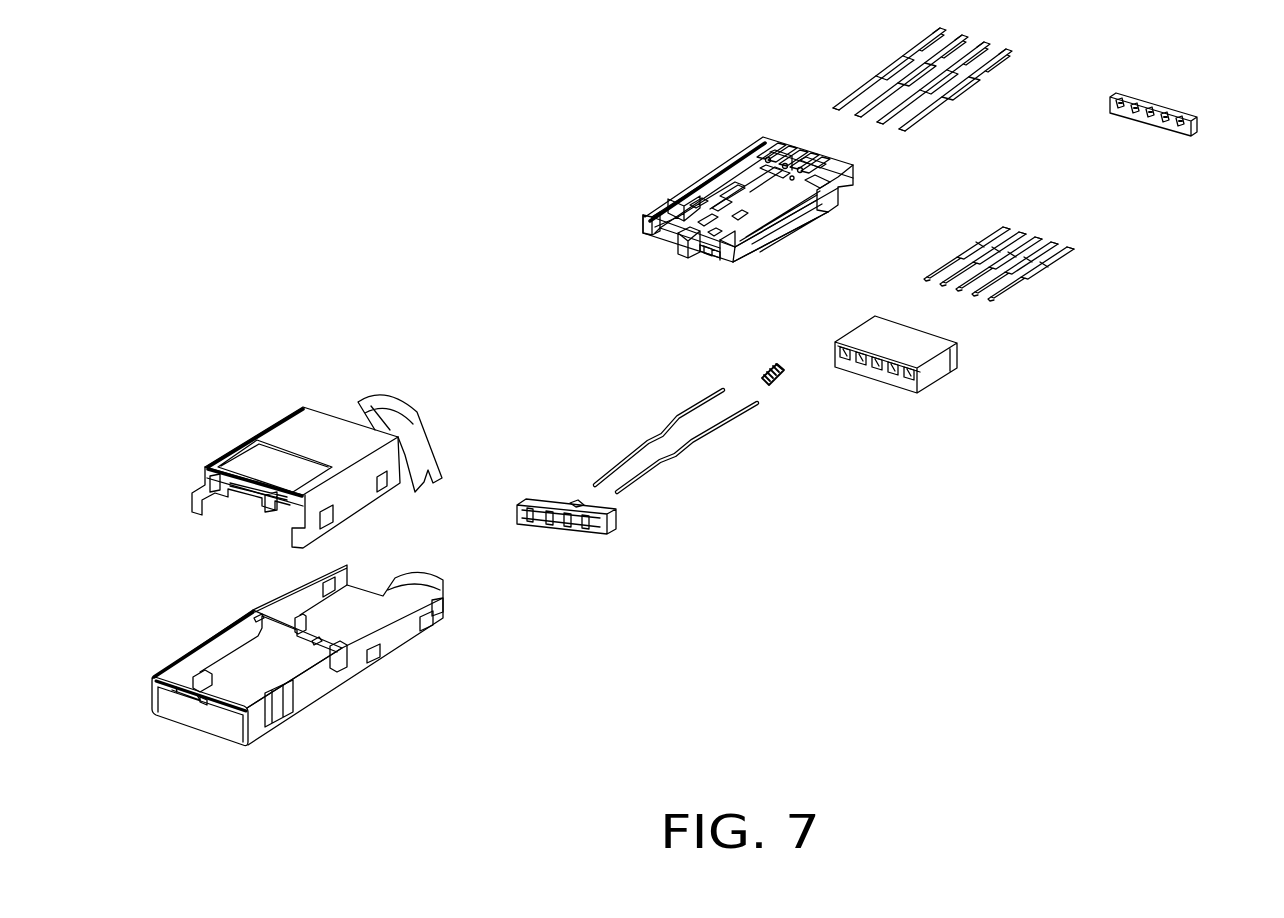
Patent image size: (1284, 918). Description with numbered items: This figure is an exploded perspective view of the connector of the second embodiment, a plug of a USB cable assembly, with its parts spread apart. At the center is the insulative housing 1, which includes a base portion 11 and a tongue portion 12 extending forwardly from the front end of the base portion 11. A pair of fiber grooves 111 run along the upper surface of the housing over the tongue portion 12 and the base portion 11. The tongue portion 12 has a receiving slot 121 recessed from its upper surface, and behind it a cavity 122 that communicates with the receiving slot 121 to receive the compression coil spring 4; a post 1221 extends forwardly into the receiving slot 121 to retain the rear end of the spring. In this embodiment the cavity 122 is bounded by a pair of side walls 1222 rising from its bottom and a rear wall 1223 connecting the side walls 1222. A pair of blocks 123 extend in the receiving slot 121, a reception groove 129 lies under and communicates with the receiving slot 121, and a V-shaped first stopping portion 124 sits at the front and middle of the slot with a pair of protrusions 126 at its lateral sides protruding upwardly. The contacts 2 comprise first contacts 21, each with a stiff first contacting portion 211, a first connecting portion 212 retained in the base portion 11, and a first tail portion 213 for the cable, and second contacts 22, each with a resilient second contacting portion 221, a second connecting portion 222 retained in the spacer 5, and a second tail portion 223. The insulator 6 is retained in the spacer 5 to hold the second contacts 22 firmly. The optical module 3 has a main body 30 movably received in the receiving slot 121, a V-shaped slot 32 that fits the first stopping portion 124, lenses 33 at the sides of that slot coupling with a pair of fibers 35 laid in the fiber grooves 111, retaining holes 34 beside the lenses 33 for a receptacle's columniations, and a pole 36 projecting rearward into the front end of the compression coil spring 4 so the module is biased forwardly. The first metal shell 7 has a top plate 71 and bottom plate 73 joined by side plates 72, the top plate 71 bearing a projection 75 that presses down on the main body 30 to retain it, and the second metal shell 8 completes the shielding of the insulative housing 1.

The insulative housing 1 is at (728, 115).
The base portion 11 is at (813, 217).
The fiber grooves 111 is at (737, 218).
The tongue portion 12 is at (760, 237).
The receiving slot 121 is at (713, 240).
The post 1221 is at (705, 223).
The cavity 122 is at (718, 213).
The side walls 1222 is at (700, 210).
The rear wall 1223 is at (725, 200).
The blocks 123 is at (643, 213).
The V-shaped first stopping portion 124 is at (687, 235).
The protrusions 126 is at (702, 250).
The reception groove 129 is at (713, 237).
The contacts 2 is at (1038, 48).
The first contacts 21 is at (950, 90).
The first contacting portion 211 is at (913, 122).
The first connecting portion 212 is at (902, 53).
The first tail portion 213 is at (1003, 55).
The second contacts 22 is at (968, 233).
The second contacting portion 221 is at (1008, 297).
The second connecting portion 222 is at (1043, 270).
The second tail portion 223 is at (1073, 253).
The optical module 3 is at (598, 356).
The main body 30 is at (533, 497).
The V-shaped slot 32 is at (553, 525).
The lenses 33 is at (567, 532).
The retaining holes 34 is at (528, 510).
The fibers 35 is at (675, 418).
The pole 36 is at (575, 503).
The compression coil spring 4 is at (780, 378).
The spacer 5 is at (970, 384).
The insulator 6 is at (1212, 129).
The first metal shell 7 is at (220, 604).
The top plate 71 is at (223, 640).
The side plates 72 is at (318, 685).
The bottom plate 73 is at (230, 723).
The projection 75 is at (207, 686).
The second metal shell 8 is at (233, 424).